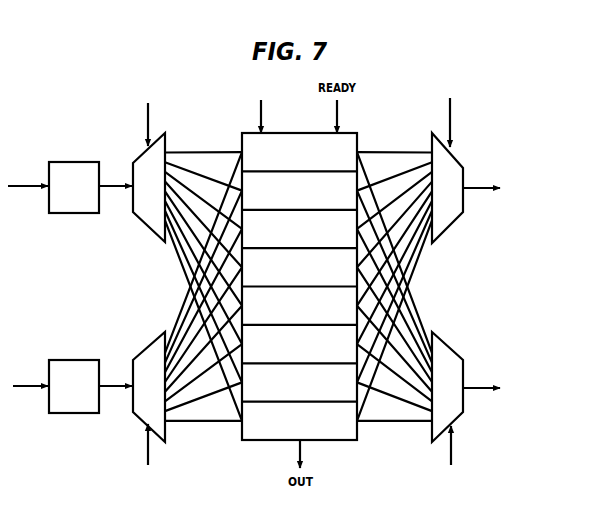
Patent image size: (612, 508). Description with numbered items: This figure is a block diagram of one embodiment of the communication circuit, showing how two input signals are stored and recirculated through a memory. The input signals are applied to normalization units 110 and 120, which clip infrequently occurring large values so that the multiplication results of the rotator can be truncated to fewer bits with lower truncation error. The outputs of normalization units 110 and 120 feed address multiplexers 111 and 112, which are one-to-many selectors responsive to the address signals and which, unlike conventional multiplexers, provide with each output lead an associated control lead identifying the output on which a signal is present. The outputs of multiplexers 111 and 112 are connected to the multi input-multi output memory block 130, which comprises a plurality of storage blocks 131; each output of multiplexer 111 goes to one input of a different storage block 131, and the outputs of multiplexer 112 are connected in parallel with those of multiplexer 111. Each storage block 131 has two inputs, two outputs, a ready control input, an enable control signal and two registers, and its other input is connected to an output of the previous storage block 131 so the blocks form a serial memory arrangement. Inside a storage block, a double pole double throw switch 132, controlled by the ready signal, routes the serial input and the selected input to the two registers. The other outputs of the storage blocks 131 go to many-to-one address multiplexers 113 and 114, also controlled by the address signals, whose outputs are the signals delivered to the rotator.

The normalization unit 110 is at (72, 162).
The normalization unit 120 is at (72, 360).
The address multiplexer 111 is at (148, 228).
The address multiplexer 112 is at (150, 349).
The address multiplexer 113 is at (454, 227).
The address multiplexer 114 is at (454, 350).
The multi input-multi output memory block 130 is at (362, 136).
The storage block 131 is at (334, 193).
The double pole double throw switch 132 is at (264, 111).